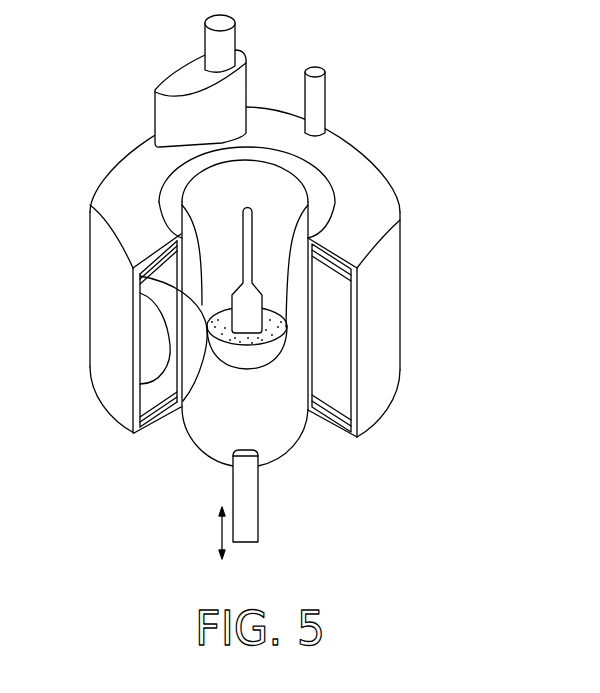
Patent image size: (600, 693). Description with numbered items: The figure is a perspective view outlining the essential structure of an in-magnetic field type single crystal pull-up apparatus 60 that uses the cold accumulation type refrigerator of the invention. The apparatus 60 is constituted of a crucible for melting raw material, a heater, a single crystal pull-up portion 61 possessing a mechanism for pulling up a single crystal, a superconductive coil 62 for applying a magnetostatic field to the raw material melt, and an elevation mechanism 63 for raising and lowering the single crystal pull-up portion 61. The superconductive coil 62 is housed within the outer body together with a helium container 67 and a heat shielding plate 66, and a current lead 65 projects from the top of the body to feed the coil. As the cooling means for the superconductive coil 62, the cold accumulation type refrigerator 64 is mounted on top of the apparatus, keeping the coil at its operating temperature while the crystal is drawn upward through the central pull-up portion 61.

The in-magnetic field type single crystal pull-up apparatus 60 is at (423, 170).
The single crystal pull-up portion 61 is at (293, 440).
The superconductive coil 62 is at (163, 397).
The elevation mechanism 63 is at (260, 510).
The cold accumulation type refrigerator 64 is at (213, 47).
The current lead 65 is at (322, 98).
The heat shielding plate 66 is at (148, 259).
The helium container 67 is at (140, 272).